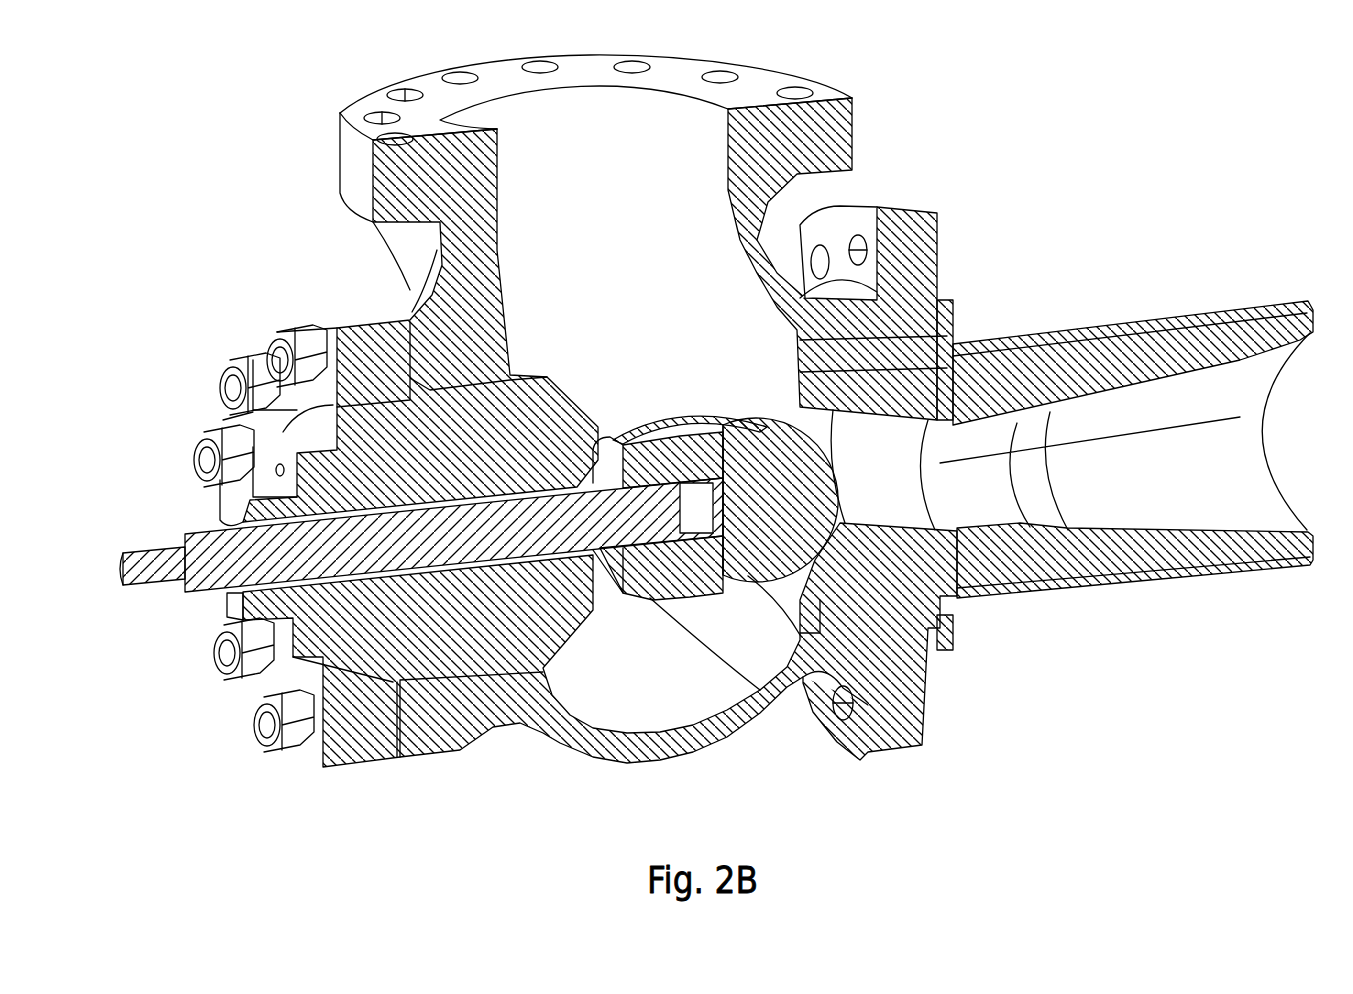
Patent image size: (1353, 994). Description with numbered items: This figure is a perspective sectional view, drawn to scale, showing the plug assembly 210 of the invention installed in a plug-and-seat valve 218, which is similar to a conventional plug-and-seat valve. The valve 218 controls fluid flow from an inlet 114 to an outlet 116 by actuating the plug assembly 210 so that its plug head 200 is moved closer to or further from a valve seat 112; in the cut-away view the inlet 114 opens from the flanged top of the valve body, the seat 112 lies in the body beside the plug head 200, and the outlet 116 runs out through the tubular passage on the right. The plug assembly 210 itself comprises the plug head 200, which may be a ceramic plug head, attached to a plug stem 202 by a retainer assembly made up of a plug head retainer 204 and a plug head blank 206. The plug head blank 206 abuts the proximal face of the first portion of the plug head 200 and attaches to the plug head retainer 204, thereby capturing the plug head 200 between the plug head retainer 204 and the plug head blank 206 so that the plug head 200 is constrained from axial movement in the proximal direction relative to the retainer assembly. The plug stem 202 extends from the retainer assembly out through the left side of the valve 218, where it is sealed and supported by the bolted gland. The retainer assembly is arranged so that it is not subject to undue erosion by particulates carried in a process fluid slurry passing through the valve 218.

The valve seat 112 is at (848, 437).
The inlet 114 is at (626, 159).
The outlet 116 is at (1219, 479).
The plug head 200 is at (787, 502).
The plug stem 202 is at (463, 552).
The plug head retainer 204 is at (688, 412).
The plug head blank 206 is at (691, 471).
The plug assembly 210 is at (146, 543).
The plug-and-seat valve 218 is at (237, 126).